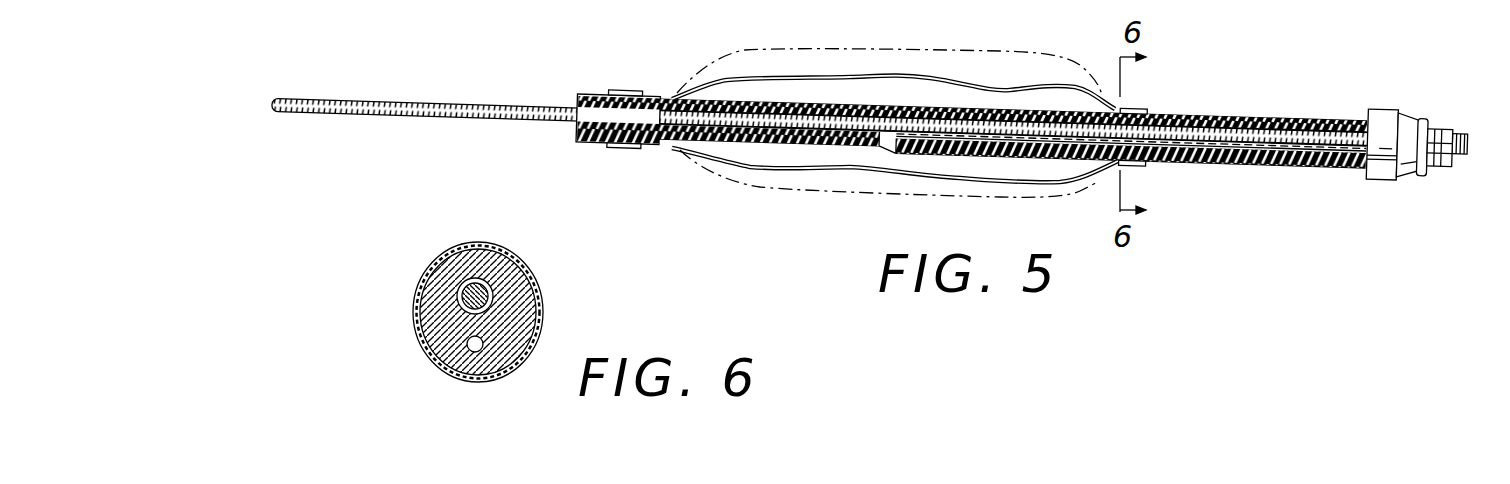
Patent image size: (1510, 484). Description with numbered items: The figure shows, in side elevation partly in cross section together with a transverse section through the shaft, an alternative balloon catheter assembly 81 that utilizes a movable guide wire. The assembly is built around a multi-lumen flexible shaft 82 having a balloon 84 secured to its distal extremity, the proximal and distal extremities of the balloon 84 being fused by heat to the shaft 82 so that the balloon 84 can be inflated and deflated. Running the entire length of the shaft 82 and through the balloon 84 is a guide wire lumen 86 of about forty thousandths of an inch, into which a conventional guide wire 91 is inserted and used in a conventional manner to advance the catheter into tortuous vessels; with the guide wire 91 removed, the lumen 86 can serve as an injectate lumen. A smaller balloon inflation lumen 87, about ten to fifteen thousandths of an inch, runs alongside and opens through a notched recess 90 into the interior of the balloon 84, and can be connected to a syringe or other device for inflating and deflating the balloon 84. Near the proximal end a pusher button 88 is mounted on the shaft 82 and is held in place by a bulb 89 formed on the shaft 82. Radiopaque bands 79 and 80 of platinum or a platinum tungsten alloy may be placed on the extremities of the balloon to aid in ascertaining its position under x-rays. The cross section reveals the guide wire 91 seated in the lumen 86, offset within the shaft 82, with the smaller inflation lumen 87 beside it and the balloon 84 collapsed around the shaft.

In FIG. 5, the radiopaque band 79 is at (1143, 173).
In FIG. 6, the radiopaque band 79 is at (507, 257).
In FIG. 5, the radiopaque band 80 is at (622, 90).
In FIG. 5, the balloon catheter assembly 81 is at (1268, 108).
In FIG. 5, the multi-lumen flexible shaft 82 is at (1217, 118).
In FIG. 6, the multi-lumen flexible shaft 82 is at (432, 355).
In FIG. 5, the balloon 84 is at (910, 77).
In FIG. 6, the balloon 84 is at (425, 280).
In FIG. 5, the guide wire lumen 86 is at (1322, 130).
In FIG. 6, the guide wire lumen 86 is at (493, 292).
In FIG. 5, the balloon inflation lumen 87 is at (977, 153).
In FIG. 6, the balloon inflation lumen 87 is at (473, 352).
In FIG. 5, the pusher button 88 is at (1392, 108).
In FIG. 5, the bulb 89 is at (1427, 118).
In FIG. 5, the notched recess 90 is at (893, 140).
In FIG. 5, the guide wire 91 is at (452, 101).
In FIG. 6, the guide wire 91 is at (442, 268).